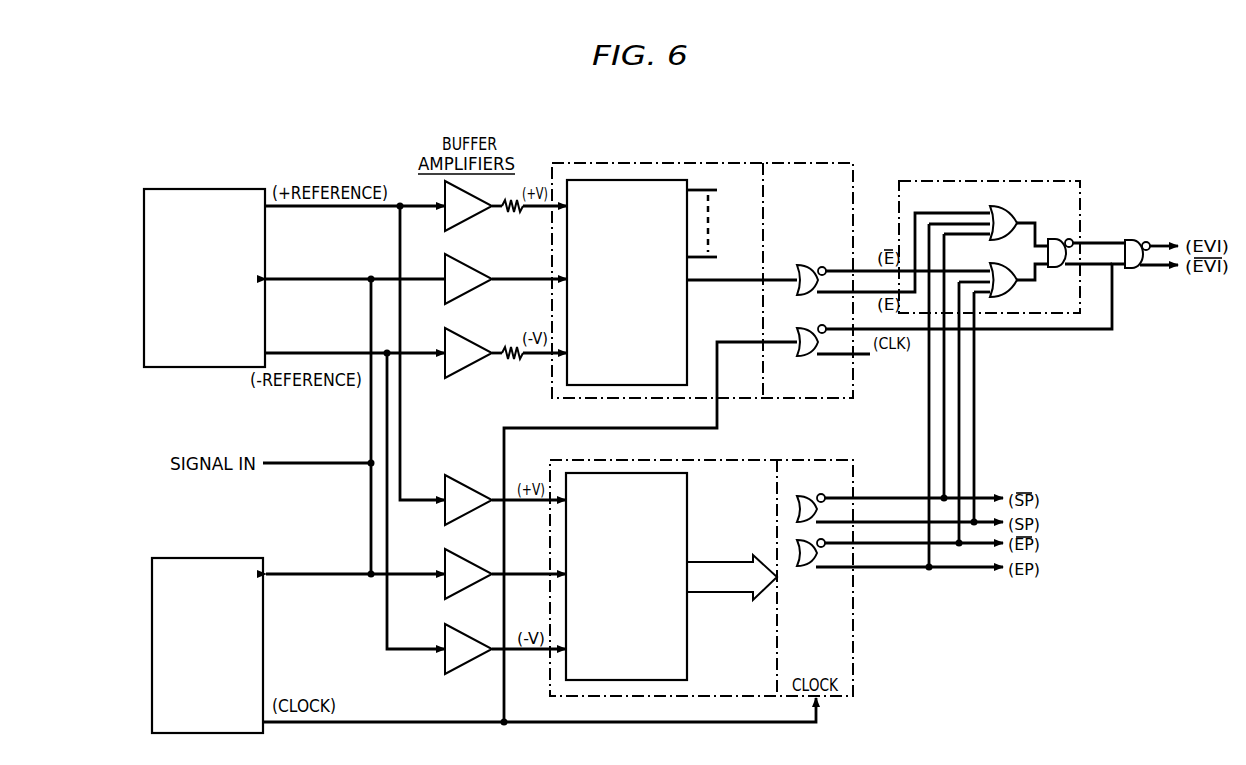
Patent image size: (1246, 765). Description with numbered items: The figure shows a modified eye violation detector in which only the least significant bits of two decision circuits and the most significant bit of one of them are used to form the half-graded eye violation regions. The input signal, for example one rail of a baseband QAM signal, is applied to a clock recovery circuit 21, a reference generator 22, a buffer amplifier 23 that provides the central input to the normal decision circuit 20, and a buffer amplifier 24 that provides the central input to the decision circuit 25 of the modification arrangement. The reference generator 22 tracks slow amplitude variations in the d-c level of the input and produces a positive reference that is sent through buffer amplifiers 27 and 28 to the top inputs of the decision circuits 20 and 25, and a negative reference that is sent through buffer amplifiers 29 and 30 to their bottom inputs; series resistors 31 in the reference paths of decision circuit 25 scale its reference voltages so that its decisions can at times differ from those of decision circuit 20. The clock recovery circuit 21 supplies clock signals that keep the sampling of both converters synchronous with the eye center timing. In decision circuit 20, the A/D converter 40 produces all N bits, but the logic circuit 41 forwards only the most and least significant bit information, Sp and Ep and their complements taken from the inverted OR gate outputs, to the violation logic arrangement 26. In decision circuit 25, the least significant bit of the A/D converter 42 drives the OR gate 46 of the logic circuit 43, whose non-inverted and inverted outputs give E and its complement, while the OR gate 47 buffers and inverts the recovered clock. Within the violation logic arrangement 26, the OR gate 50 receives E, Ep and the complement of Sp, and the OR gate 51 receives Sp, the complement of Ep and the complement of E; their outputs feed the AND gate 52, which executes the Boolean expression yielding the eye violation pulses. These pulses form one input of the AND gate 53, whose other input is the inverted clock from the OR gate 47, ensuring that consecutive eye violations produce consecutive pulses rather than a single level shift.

The decision circuit 20 is at (734, 506).
The clock recovery circuit 21 is at (163, 559).
The reference generator 22 is at (231, 190).
The buffer amplifier 23 is at (446, 566).
The buffer amplifier 24 is at (446, 271).
The decision circuit 25 is at (711, 165).
The violation logic arrangement 26 is at (998, 181).
The buffer amplifier 27 is at (446, 491).
The buffer amplifier 28 is at (446, 198).
The buffer amplifier 29 is at (446, 640).
The buffer amplifier 30 is at (446, 342).
The series resistors 31 is at (512, 211).
The A/D converter 40 is at (638, 633).
The logic circuit 41 is at (800, 470).
The A/D converter 42 is at (620, 184).
The logic circuit 43 is at (808, 180).
The OR gate 46 is at (800, 266).
The OR gate 47 is at (800, 356).
The OR gate 50 is at (1005, 213).
The OR gate 51 is at (1002, 297).
The AND gate 52 is at (1057, 240).
The AND gate 53 is at (1135, 241).